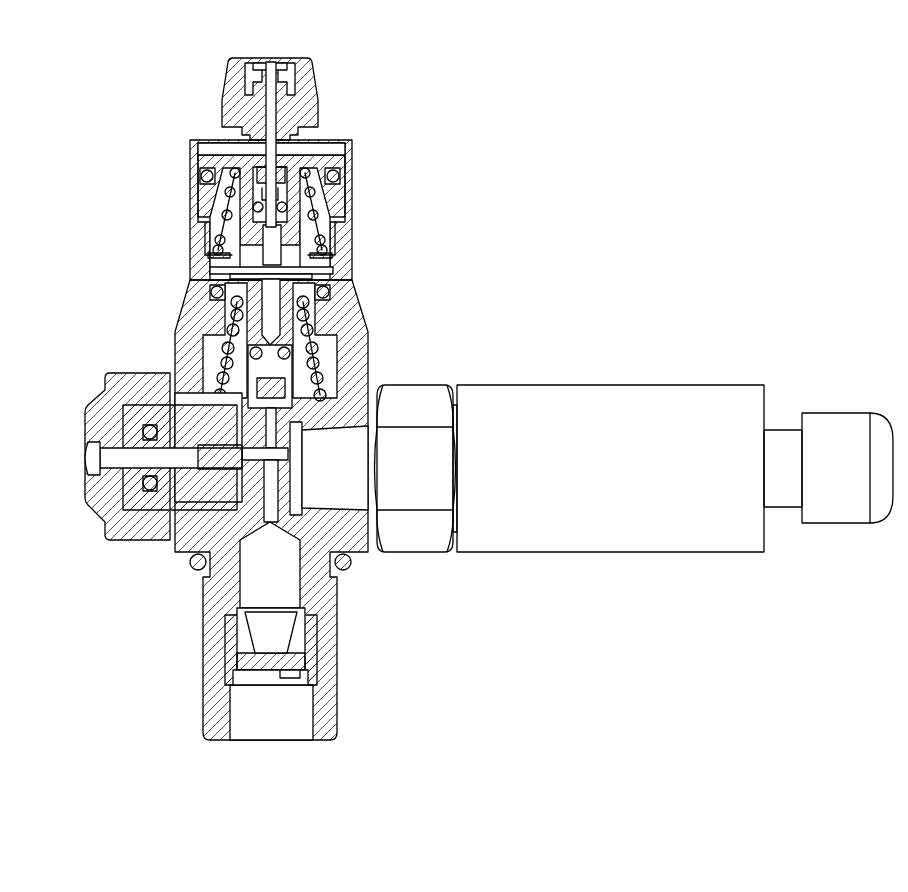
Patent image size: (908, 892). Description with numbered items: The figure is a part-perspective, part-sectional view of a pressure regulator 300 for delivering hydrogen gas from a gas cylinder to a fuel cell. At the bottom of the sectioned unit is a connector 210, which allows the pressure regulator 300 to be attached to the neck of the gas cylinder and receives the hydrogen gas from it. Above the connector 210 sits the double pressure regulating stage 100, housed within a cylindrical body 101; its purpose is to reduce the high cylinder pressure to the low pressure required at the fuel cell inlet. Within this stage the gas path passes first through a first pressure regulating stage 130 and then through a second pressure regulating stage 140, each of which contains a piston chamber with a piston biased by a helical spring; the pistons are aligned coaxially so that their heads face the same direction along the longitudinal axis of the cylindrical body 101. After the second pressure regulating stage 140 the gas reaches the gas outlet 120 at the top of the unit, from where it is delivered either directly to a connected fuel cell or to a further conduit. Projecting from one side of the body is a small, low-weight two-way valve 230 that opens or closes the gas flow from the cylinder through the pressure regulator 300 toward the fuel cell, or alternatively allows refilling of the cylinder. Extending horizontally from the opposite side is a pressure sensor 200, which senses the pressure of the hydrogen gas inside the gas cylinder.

The double pressure regulating stage 100 is at (228, 421).
The cylindrical body 101 is at (352, 247).
The gas outlet 120 is at (228, 110).
The first pressure regulating stage 130 is at (192, 295).
The second pressure regulating stage 140 is at (192, 175).
The pressure sensor 200 is at (736, 395).
The connector 210 is at (270, 730).
The two-way valve 230 is at (92, 426).
The pressure regulator 300 is at (459, 435).